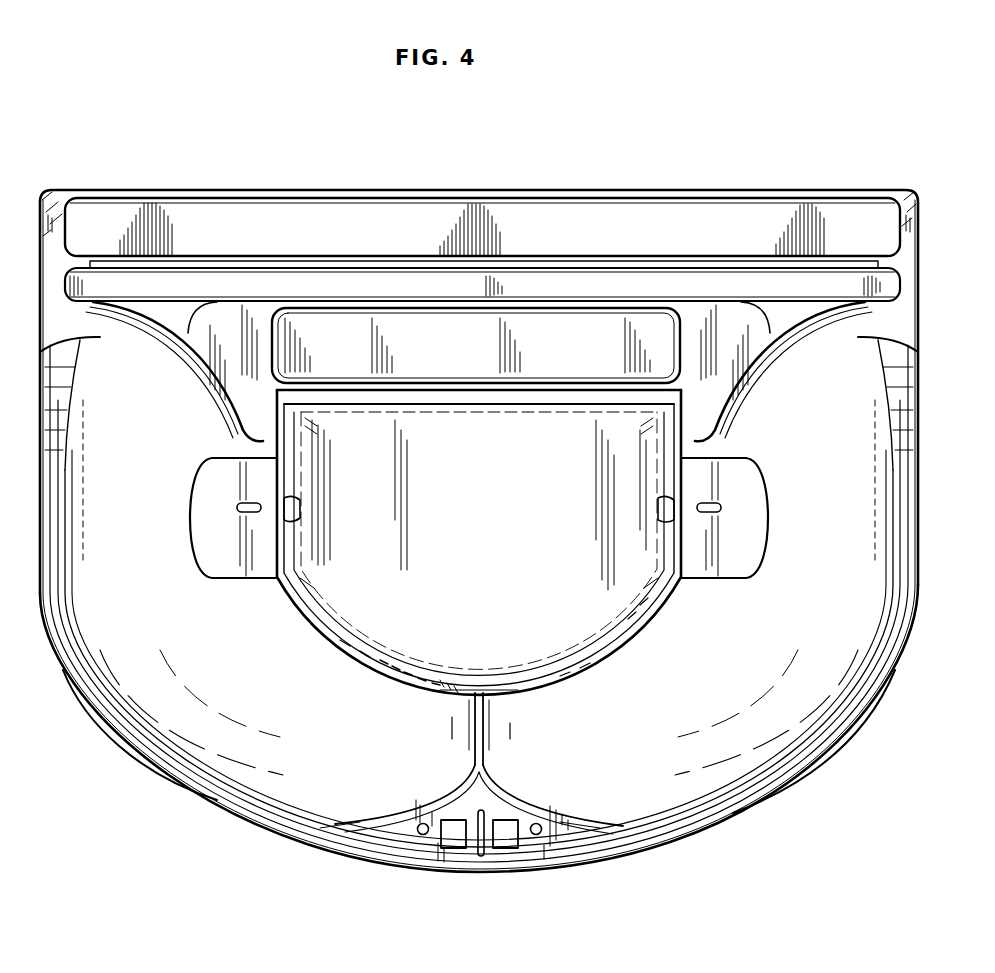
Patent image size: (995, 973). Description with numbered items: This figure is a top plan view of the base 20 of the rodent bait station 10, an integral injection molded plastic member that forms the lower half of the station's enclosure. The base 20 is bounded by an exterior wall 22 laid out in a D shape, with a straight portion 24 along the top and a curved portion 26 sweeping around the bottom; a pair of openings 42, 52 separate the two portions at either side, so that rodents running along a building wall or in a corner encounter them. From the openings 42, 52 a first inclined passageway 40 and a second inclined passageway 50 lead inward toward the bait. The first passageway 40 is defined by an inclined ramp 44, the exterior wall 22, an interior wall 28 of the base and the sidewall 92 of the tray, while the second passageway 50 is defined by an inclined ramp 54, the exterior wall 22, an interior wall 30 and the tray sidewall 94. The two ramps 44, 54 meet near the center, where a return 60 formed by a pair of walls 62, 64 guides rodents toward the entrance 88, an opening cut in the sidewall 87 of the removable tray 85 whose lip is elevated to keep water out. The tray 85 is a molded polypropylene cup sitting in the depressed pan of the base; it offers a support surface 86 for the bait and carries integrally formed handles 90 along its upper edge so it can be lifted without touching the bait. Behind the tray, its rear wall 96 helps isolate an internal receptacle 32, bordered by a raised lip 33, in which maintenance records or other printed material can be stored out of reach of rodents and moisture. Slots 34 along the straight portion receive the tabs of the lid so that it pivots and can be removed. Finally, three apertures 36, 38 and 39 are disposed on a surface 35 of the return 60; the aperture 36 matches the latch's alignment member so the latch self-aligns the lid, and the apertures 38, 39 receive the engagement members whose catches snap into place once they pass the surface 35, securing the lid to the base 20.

The rodent bait station 10 is at (177, 76).
The base 20 is at (43, 192).
The exterior wall 22 is at (170, 780).
The straight portion 24 is at (481, 262).
The curved portion 26 is at (722, 815).
The interior wall 28 is at (745, 372).
The interior wall 30 is at (213, 388).
The internal receptacle 32 is at (570, 322).
The lip 33 is at (448, 392).
The slots 34 is at (232, 262).
The surface 35 is at (572, 826).
The aperture 36 is at (481, 858).
The aperture 38 is at (514, 846).
The aperture 39 is at (445, 846).
The first inclined passageway 40 is at (876, 375).
The opening 42 is at (858, 337).
The inclined ramp 44 is at (711, 698).
The second inclined passageway 50 is at (82, 384).
The opening 52 is at (100, 337).
The inclined ramp 54 is at (263, 684).
The return 60 is at (488, 798).
The wall 62 is at (537, 806).
The wall 64 is at (418, 806).
The removable tray 85 is at (430, 665).
The support surface 86 is at (497, 535).
The sidewall 87 is at (662, 614).
The entrance 88 is at (498, 686).
The handles 90 is at (208, 529).
The sidewall 92 is at (580, 668).
The sidewall 94 is at (381, 680).
The rear wall 96 is at (459, 406).